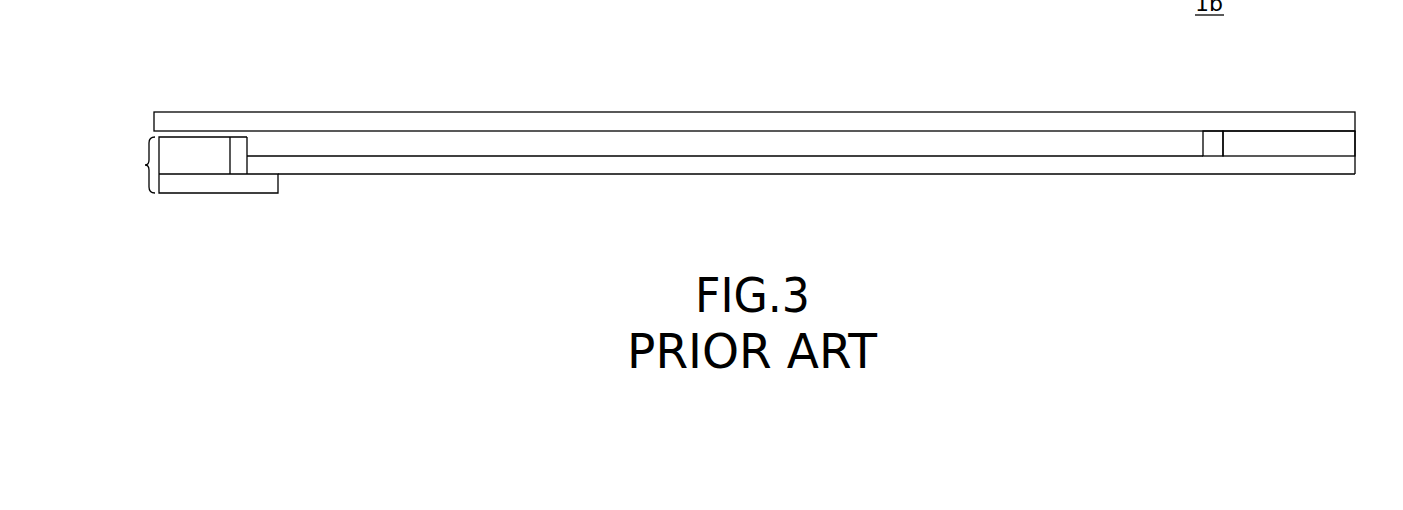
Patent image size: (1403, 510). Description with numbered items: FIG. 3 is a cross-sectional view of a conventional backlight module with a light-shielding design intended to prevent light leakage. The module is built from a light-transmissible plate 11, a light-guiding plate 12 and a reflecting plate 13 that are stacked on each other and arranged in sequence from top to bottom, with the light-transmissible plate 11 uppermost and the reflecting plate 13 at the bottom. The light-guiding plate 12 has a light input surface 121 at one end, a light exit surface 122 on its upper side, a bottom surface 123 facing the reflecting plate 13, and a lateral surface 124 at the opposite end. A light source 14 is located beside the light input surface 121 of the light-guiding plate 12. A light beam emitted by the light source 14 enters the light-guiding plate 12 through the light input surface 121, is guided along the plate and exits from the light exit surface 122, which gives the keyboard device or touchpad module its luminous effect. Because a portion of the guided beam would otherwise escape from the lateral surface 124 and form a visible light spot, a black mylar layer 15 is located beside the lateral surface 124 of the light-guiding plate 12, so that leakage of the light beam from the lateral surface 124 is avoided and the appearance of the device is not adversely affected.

The light-transmissible plate 11 is at (946, 122).
The light-guiding plate 12 is at (1062, 145).
The reflecting plate 13 is at (1007, 165).
The light source 14 is at (194, 165).
The black mylar layer 15 is at (1343, 143).
The light input surface 121 is at (242, 147).
The light exit surface 122 is at (673, 122).
The bottom surface 123 is at (735, 166).
The lateral surface 124 is at (1216, 152).